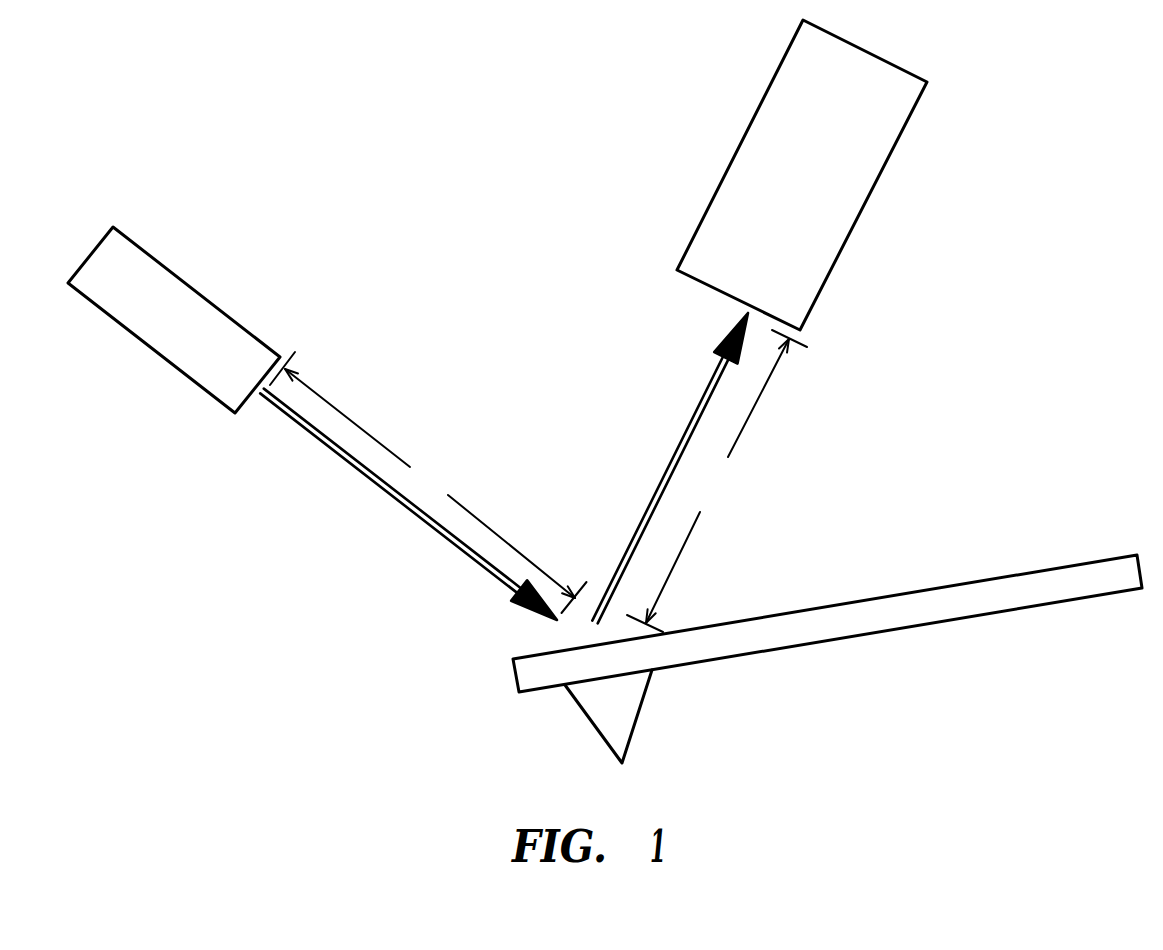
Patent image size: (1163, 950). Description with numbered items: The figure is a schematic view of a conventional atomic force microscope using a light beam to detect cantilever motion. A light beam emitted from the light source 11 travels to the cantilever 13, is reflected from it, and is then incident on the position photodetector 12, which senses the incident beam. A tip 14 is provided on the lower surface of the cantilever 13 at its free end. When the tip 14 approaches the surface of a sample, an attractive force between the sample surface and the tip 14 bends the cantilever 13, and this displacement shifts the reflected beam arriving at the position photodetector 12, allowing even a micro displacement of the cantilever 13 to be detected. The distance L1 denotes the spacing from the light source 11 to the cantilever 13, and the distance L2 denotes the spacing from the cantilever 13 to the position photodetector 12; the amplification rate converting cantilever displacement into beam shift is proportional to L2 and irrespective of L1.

The light source 11 is at (178, 292).
The position photodetector 12 is at (847, 230).
The cantilever 13 is at (977, 588).
The tip 14 is at (632, 703).
The distance from the light source to the cantilever L1 is at (428, 482).
The distance from the cantilever to the position photodetector L2 is at (717, 481).